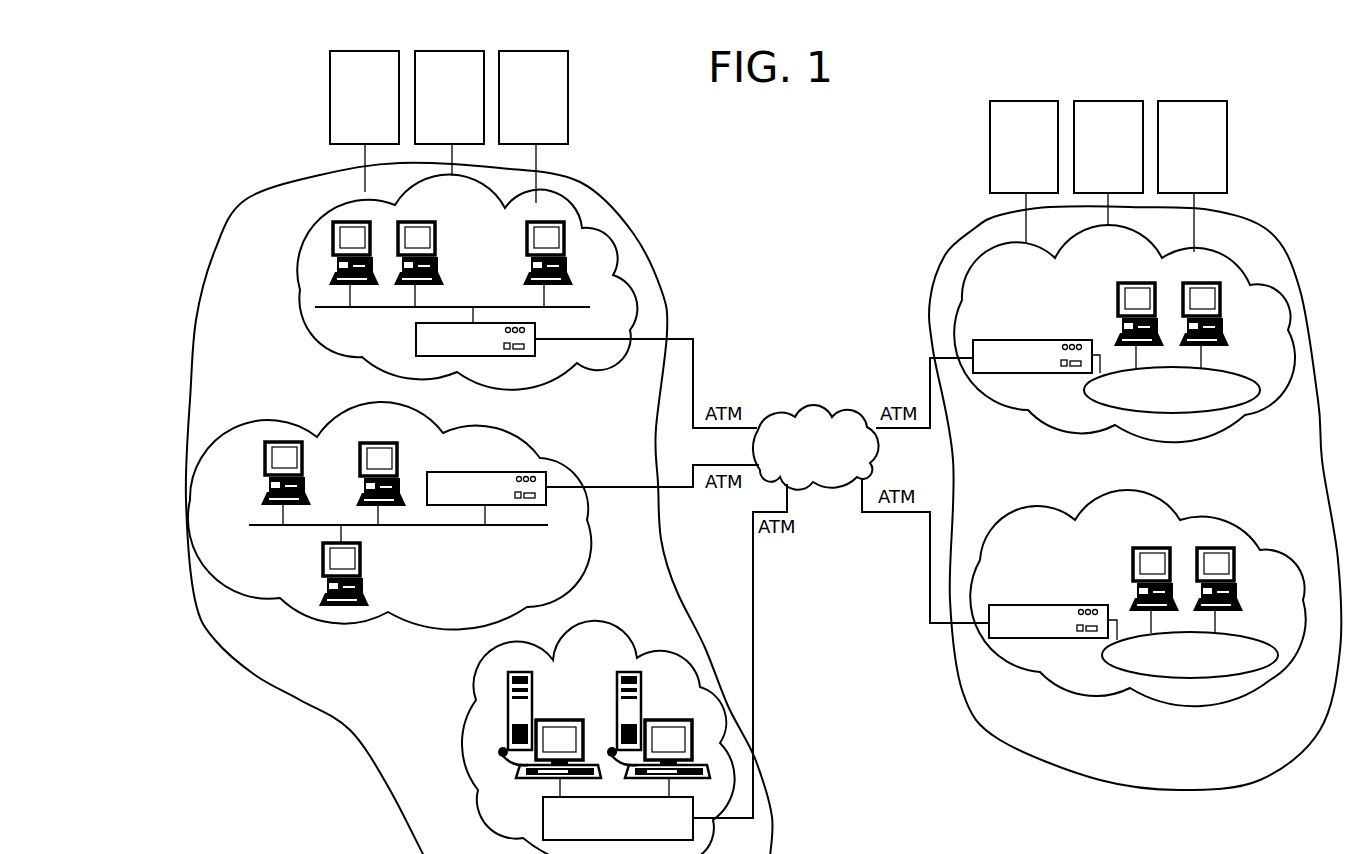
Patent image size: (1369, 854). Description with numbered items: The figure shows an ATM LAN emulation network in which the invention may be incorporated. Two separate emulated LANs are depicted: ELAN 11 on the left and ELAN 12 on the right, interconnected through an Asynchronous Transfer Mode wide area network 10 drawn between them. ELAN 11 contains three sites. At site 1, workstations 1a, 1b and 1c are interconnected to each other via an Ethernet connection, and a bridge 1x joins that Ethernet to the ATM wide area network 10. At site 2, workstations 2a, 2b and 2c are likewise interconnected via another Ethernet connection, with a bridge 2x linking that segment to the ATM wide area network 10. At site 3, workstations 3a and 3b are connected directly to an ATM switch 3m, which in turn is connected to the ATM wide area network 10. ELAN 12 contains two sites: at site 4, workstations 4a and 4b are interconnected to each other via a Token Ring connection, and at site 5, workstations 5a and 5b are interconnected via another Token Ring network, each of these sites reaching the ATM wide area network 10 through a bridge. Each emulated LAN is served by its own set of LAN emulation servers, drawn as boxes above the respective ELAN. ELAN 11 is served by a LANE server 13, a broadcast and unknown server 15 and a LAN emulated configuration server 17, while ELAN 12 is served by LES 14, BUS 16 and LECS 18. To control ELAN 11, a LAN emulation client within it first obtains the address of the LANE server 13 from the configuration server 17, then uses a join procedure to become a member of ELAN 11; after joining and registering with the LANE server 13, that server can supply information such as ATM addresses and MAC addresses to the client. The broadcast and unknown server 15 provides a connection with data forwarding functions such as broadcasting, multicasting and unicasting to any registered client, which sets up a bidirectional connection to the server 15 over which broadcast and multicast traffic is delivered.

The site 1 is at (312, 244).
The workstation 1a is at (333, 246).
The workstation 1b is at (419, 222).
The workstation 1c is at (526, 234).
The bridge 1x is at (416, 340).
The site 2 is at (282, 423).
The workstation 2a is at (263, 462).
The workstation 2b is at (362, 442).
The workstation 2c is at (324, 547).
The bridge 2x is at (473, 471).
The site 3 is at (590, 620).
The workstation 3a is at (548, 718).
The workstation 3b is at (664, 711).
The ATM switch 3m is at (543, 818).
The site 4 is at (981, 283).
The workstation 4a is at (1118, 306).
The workstation 4b is at (1222, 331).
The site 5 is at (1095, 500).
The workstation 5a is at (1133, 580).
The workstation 5b is at (1238, 576).
The ATM wide area network 10 is at (806, 404).
The ELAN 11 is at (583, 178).
The ELAN 12 is at (962, 232).
The LANE server 13 is at (378, 128).
The LES 14 is at (1037, 177).
The broadcast and unknown server 15 is at (463, 128).
The BUS 16 is at (1121, 177).
The LAN emulated configuration server 17 is at (547, 128).
The LECS 18 is at (1205, 177).